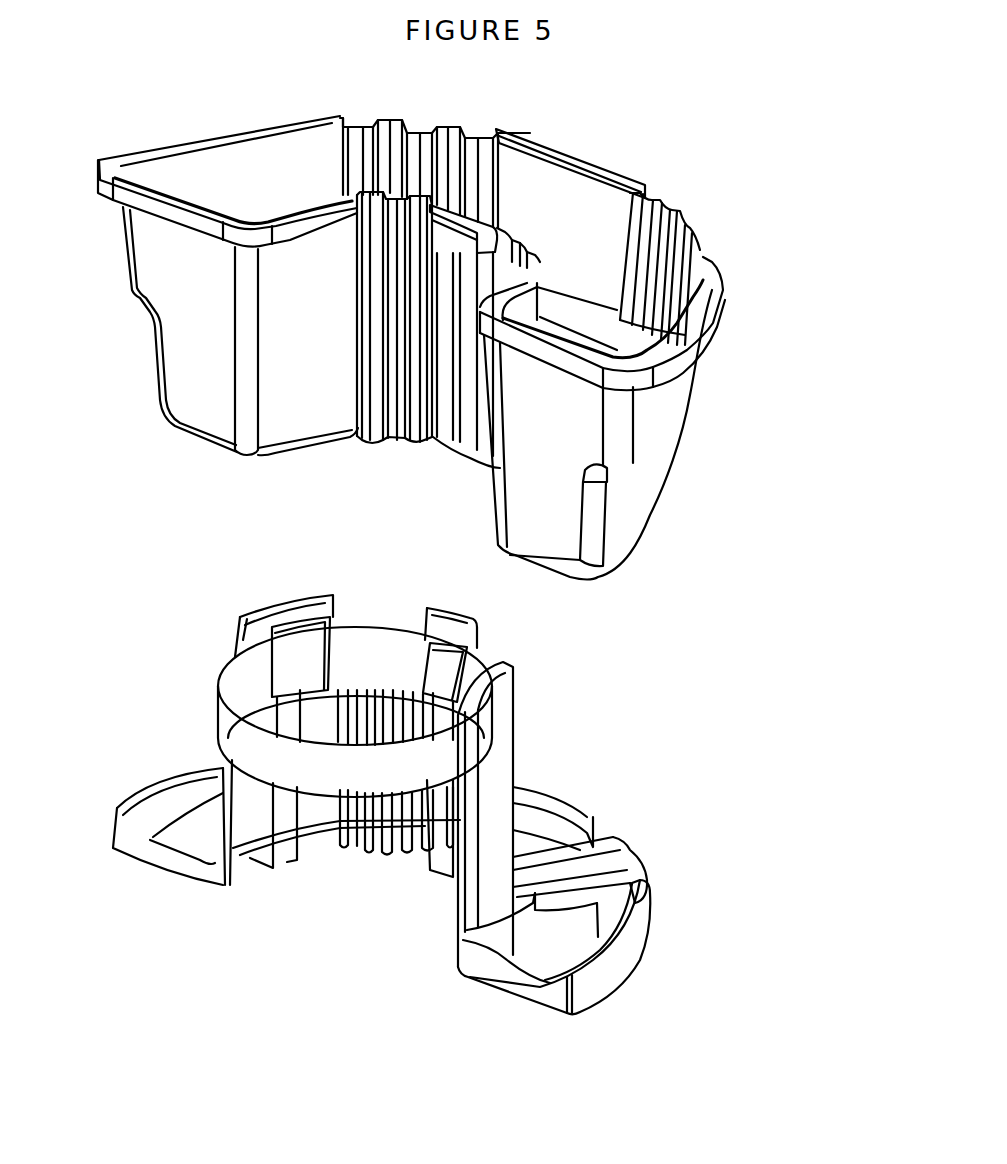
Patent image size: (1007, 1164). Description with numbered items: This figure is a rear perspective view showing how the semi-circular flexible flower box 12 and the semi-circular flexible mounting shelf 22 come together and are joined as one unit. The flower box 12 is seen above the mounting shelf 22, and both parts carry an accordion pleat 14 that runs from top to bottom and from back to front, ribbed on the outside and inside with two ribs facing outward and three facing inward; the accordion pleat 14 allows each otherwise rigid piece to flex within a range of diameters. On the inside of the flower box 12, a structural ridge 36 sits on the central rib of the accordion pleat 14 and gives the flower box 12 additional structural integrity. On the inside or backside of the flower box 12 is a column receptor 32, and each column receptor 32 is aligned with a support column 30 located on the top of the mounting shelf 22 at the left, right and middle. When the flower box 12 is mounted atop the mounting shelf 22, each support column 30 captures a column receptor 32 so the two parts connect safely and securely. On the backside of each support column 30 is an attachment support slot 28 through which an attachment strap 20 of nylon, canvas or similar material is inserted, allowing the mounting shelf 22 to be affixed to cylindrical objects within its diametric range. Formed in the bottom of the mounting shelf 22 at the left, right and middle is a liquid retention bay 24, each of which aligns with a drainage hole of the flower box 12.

The flower box 12 is at (210, 328).
The accordion pleat 14 is at (388, 440).
The attachment strap 20 is at (253, 738).
The mounting shelf 22 is at (495, 822).
The liquid retention bay 24 is at (210, 843).
The attachment support slot 28 is at (282, 658).
The support column 30 is at (250, 608).
The column receptor 32 is at (150, 222).
The structural ridge 36 is at (633, 337).